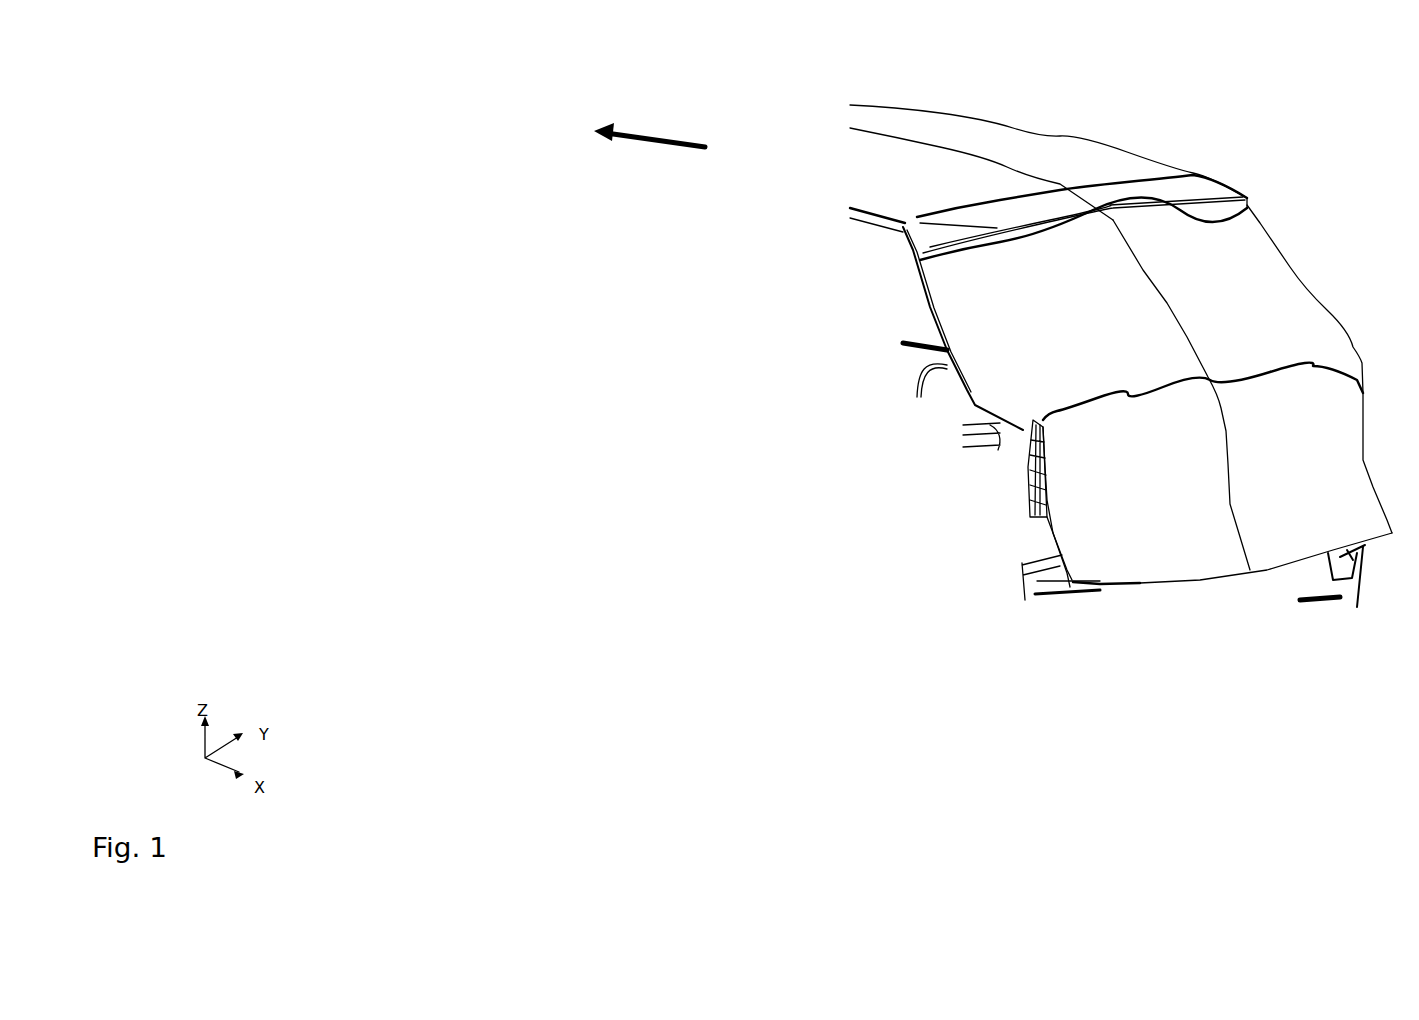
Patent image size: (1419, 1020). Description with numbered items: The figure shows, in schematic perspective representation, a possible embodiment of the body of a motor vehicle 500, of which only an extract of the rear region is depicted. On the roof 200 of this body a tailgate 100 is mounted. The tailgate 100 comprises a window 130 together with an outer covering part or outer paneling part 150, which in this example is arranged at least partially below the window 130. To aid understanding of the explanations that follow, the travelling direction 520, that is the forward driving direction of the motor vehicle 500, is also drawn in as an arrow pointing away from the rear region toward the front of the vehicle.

The tailgate 100 is at (1313, 275).
The window 130 is at (1238, 255).
The outer paneling part 150 is at (1157, 525).
The roof 200 is at (928, 160).
The motor vehicle 500 is at (1072, 115).
The travelling direction 520 is at (655, 137).